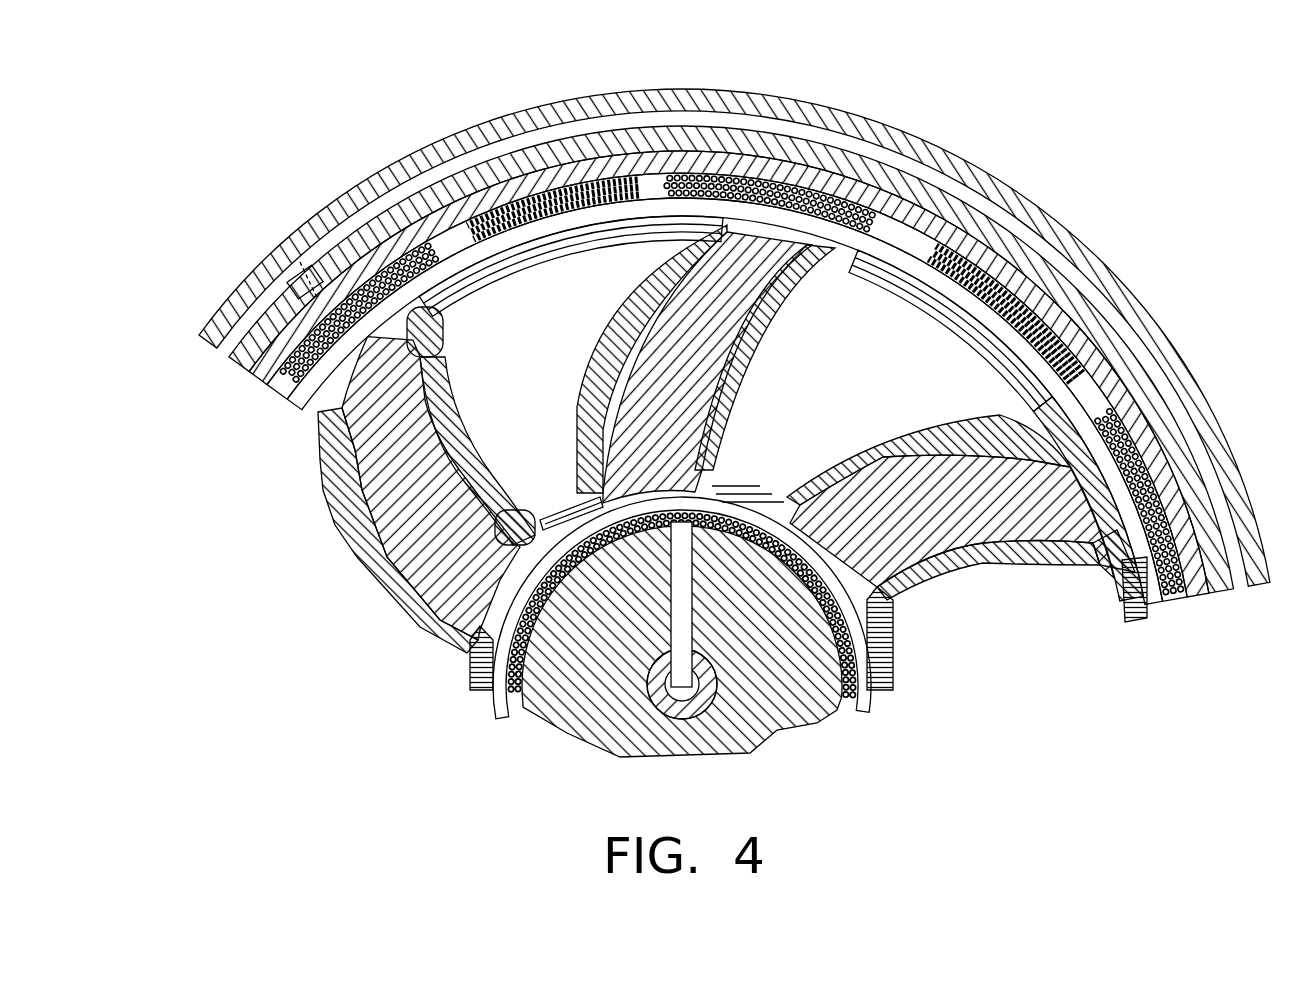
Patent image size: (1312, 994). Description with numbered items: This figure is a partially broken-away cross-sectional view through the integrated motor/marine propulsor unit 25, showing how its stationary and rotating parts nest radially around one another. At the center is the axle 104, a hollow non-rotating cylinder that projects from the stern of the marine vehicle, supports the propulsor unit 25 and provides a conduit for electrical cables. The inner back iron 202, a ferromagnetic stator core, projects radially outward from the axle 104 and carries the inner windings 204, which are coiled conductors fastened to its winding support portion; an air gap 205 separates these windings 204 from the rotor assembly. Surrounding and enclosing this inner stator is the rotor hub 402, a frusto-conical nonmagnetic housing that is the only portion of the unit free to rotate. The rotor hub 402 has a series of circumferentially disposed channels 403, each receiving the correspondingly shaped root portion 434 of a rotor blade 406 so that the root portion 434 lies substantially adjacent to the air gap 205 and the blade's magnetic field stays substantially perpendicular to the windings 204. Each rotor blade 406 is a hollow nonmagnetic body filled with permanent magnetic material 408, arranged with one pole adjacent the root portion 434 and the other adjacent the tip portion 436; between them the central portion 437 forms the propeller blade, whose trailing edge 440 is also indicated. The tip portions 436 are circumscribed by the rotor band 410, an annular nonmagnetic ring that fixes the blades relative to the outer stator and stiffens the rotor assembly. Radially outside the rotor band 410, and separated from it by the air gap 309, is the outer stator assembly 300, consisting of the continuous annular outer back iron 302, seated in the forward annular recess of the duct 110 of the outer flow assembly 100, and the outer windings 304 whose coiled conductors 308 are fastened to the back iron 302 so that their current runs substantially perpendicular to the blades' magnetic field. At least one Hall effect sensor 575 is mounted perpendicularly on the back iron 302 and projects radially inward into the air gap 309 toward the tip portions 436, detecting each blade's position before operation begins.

The integrated motor/marine propulsor unit 25 is at (721, 403).
The outer flow assembly 100 is at (728, 307).
The duct 110 is at (682, 88).
The outer stator assembly 300 is at (828, 138).
The outer back iron 302 is at (462, 195).
The windings 304 is at (787, 188).
The coiled conductors 308 is at (1010, 285).
The air gap 309 is at (720, 211).
The Hall effect sensor 575 is at (300, 282).
The rotor band 410 is at (498, 287).
The permanent magnetic material 408 is at (713, 333).
The central portion 437 is at (597, 342).
The trailing edge 440 is at (822, 290).
The rotor blades 406 is at (798, 335).
The root portion 434 is at (467, 597).
The tip portion 436 is at (325, 428).
The channels 403 is at (505, 515).
The rotor hub 402 is at (750, 495).
The inner back iron 202 is at (805, 722).
The windings 204 is at (874, 648).
The air gap 205 is at (503, 655).
The axle 104 is at (653, 700).